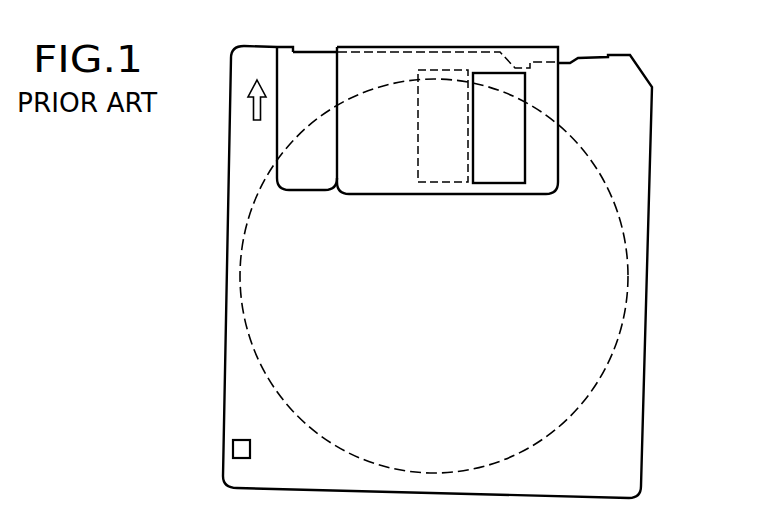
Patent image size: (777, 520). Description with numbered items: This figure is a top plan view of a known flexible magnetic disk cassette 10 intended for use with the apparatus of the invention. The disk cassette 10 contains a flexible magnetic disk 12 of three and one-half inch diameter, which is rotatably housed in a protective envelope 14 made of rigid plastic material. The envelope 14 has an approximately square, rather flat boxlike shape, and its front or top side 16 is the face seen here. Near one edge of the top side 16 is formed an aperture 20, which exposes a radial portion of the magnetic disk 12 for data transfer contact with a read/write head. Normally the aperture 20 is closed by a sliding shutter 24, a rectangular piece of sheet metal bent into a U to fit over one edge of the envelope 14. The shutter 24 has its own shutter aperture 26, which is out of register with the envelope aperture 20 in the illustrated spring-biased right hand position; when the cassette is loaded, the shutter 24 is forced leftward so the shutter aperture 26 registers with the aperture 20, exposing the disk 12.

The disk cassette 10 is at (675, 78).
The flexible magnetic disk 12 is at (628, 262).
The protective envelope 14 is at (655, 217).
The front or top side 16 is at (227, 385).
The aperture 20 is at (418, 146).
The sliding shutter 24 is at (381, 54).
The shutter aperture 26 is at (523, 170).